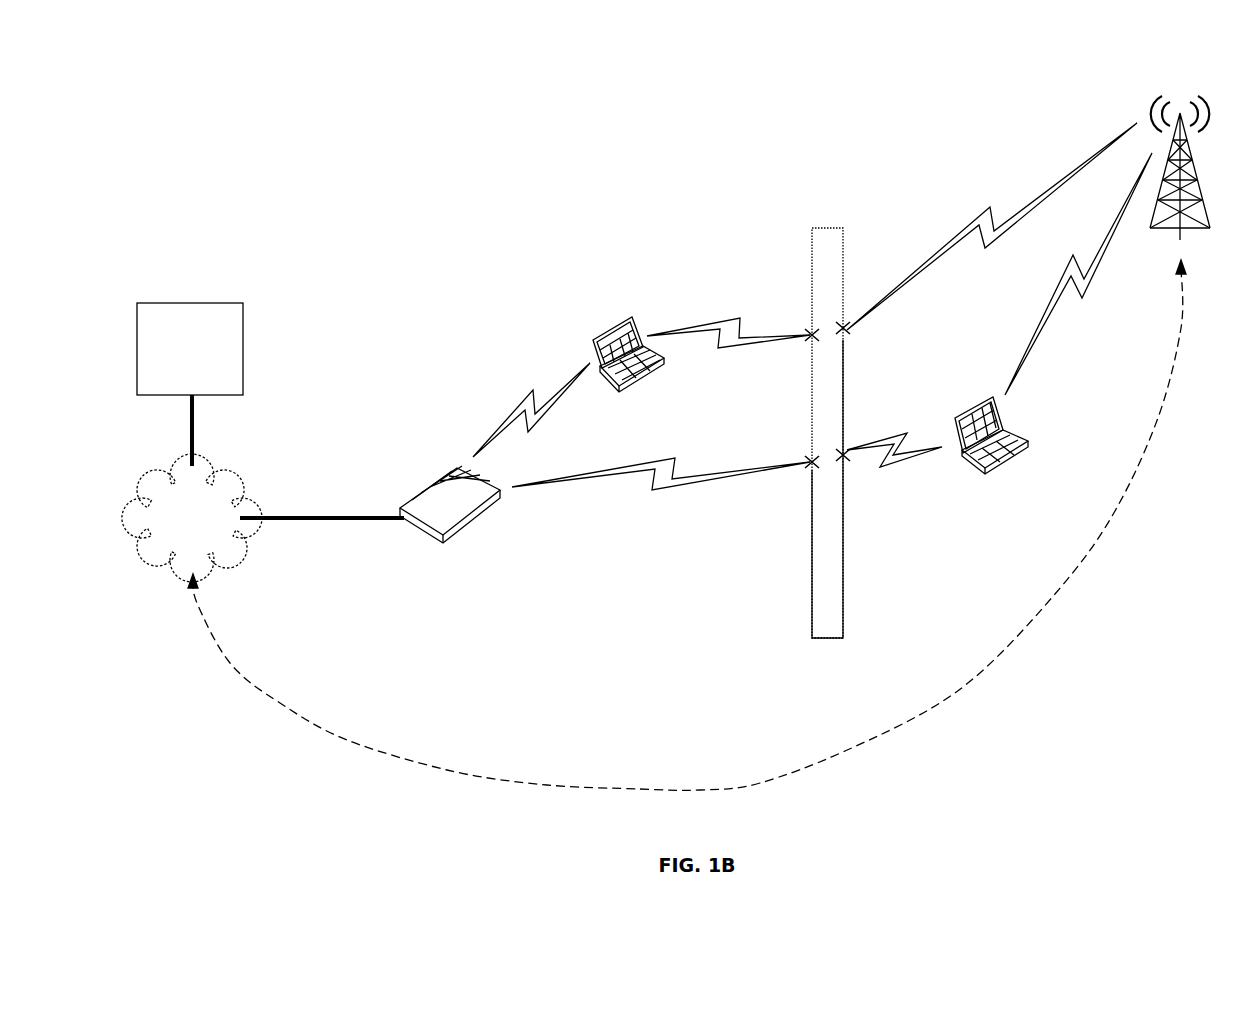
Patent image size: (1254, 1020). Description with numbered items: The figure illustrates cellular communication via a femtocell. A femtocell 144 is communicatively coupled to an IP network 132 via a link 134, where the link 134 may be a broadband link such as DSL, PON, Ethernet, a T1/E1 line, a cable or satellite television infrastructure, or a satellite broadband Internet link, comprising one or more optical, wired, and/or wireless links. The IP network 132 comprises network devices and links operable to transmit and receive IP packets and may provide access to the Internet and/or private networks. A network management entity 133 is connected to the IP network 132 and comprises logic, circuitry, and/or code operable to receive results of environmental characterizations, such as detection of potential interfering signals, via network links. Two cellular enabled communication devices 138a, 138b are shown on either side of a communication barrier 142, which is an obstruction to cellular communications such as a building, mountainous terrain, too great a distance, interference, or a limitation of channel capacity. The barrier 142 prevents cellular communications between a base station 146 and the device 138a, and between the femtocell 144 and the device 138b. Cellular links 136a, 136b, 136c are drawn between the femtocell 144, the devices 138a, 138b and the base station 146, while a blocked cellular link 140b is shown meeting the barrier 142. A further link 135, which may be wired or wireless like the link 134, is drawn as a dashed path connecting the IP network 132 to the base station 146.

The IP network 132 is at (186, 470).
The network management entity 133 is at (243, 320).
The link 134 is at (352, 517).
The link 135 is at (640, 789).
The cellular link 136a is at (522, 406).
The cellular link 136b is at (1082, 348).
The cellular link 136c is at (960, 229).
The cellular enabled communication device 138a is at (621, 388).
The cellular enabled communication device 138b is at (997, 470).
The cellular link 140b is at (664, 490).
The communication barrier 142 is at (812, 229).
The femtocell 144 is at (446, 485).
The base station 146 is at (1190, 165).